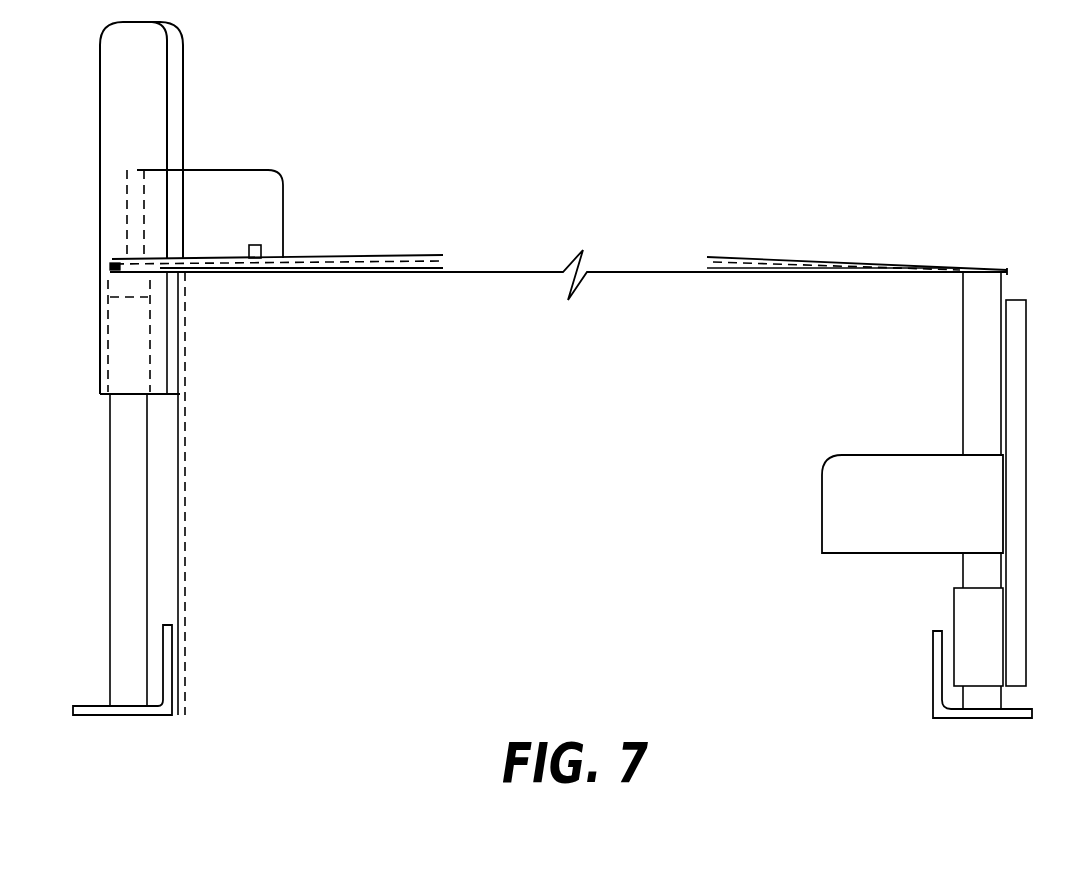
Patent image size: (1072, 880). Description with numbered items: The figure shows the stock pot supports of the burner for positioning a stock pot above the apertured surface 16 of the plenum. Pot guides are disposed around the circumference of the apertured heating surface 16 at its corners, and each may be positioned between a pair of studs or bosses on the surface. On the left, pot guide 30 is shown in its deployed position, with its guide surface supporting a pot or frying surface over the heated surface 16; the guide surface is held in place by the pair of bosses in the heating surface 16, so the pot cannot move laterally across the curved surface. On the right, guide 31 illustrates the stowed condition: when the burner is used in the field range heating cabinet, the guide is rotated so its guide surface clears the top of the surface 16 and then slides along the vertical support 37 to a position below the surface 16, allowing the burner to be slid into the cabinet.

The pot guide 30 is at (100, 38).
The apertured surface 16 is at (750, 257).
The vertical support 37 is at (108, 625).
The pot guide 31 is at (916, 510).